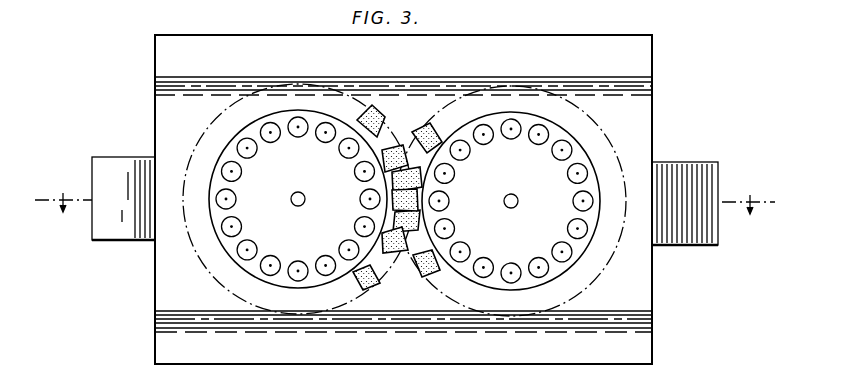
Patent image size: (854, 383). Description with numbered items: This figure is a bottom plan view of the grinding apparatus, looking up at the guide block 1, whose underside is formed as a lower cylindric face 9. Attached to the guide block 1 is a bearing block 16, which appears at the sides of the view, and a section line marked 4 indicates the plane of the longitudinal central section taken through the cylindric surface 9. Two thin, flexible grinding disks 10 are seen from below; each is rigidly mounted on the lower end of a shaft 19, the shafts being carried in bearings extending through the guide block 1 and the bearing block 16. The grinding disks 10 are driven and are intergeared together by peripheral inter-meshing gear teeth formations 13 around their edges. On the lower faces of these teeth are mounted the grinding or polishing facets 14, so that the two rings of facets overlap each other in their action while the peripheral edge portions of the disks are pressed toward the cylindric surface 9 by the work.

The guide block 1 is at (645, 322).
The section line 4 is at (402, 203).
The lower cylindric face 9 is at (160, 337).
The grinding disk 10 is at (310, 107).
The inter-meshing gear teeth formations 13 is at (418, 198).
The grinding facets 14 is at (421, 131).
The bearing block 16 is at (105, 240).
The shaft 19 is at (300, 193).